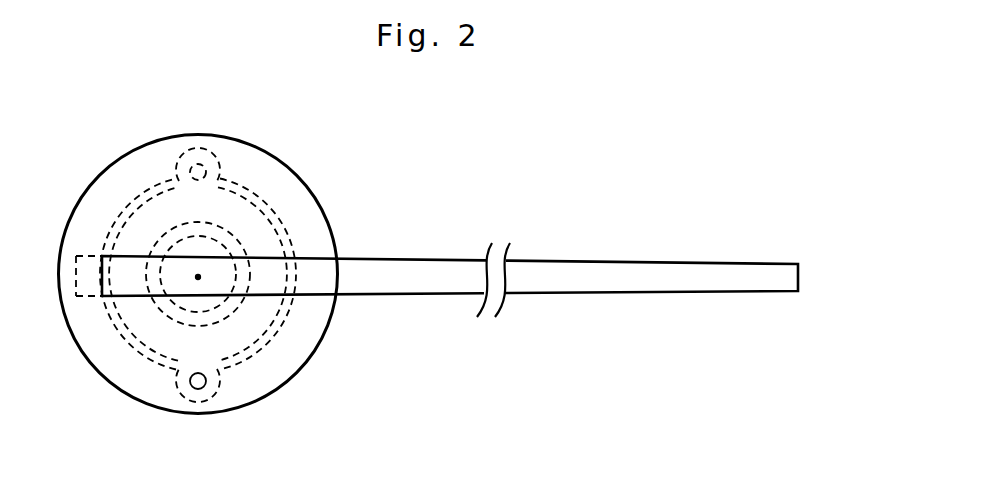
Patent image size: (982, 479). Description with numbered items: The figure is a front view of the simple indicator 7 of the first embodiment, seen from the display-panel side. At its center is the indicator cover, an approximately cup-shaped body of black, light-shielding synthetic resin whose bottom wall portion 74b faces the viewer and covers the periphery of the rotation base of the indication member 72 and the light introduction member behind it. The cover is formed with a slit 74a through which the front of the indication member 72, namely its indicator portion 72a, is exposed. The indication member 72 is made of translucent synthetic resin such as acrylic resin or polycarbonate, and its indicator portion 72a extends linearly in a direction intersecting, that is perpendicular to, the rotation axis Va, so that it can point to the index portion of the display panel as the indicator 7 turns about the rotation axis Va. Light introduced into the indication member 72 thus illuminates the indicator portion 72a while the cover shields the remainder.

The indicator 7 is at (258, 137).
The bottom wall portion 74b is at (118, 185).
The slit 74a is at (267, 258).
The rotation axis Va is at (198, 277).
The indication member 72 is at (563, 230).
The indicator portion 72a is at (410, 290).